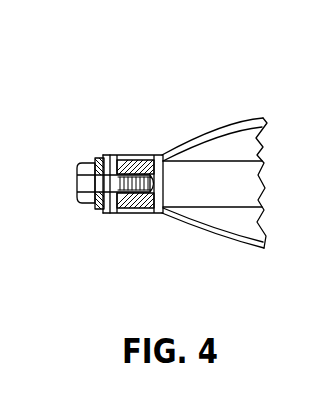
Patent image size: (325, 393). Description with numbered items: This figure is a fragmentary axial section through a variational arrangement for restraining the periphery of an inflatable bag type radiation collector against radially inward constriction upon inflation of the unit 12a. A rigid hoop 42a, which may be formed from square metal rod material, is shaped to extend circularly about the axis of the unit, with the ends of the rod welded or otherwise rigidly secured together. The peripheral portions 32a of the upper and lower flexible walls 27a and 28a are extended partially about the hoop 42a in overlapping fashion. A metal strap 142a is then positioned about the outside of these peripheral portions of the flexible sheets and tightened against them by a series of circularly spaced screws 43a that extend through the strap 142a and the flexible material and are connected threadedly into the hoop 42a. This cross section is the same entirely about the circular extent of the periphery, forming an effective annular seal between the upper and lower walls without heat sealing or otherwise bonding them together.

The unit 12a is at (222, 113).
The upper flexible wall 27a is at (242, 118).
The lower flexible wall 28a is at (247, 245).
The peripheral portions 32a is at (117, 156).
The hoop 42a is at (152, 160).
The screws 43a is at (92, 161).
The metal strap 142a is at (95, 208).